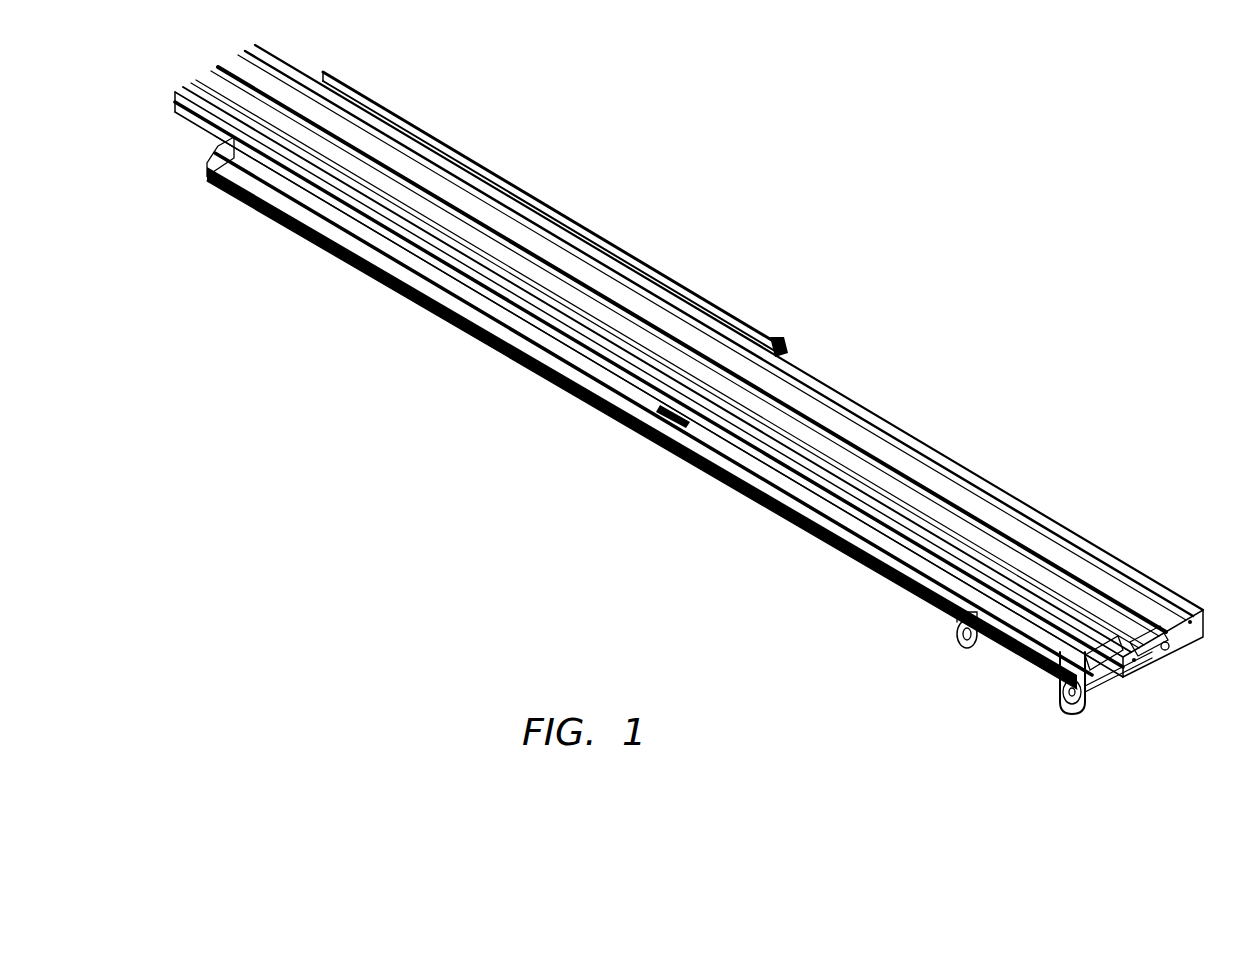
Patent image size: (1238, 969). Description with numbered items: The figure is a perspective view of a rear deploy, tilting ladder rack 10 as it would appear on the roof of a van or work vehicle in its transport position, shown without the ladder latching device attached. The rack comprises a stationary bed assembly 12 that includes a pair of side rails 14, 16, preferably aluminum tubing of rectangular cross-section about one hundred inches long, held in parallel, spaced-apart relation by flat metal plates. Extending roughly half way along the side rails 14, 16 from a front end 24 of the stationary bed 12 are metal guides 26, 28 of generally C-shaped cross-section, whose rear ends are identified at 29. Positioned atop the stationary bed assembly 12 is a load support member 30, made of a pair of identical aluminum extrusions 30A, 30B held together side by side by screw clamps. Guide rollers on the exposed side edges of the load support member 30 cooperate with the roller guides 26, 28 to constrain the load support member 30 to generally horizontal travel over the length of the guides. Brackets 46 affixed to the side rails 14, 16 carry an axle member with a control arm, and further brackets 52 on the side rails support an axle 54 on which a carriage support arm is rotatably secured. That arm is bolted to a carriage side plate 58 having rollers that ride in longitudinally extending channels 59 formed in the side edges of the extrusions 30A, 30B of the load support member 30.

The rear deploy, tilting ladder rack 10 is at (581, 115).
The stationary bed assembly 12 is at (696, 479).
The side rail 14 is at (490, 334).
The side rail 16 is at (843, 393).
The front end 24 is at (213, 162).
The metal guide 26 is at (352, 89).
The metal guide 28 is at (283, 203).
The rear ends of the metal guides 29 is at (785, 350).
The load support member 30 is at (893, 440).
The aluminum extrusion 30A is at (940, 484).
The aluminum extrusion 30B is at (970, 537).
The bracket 46 is at (962, 648).
The bracket 52 is at (1075, 716).
The axle 54 is at (1093, 688).
The carriage side plate 58 is at (1040, 638).
The longitudinally extending channel 59 is at (880, 527).